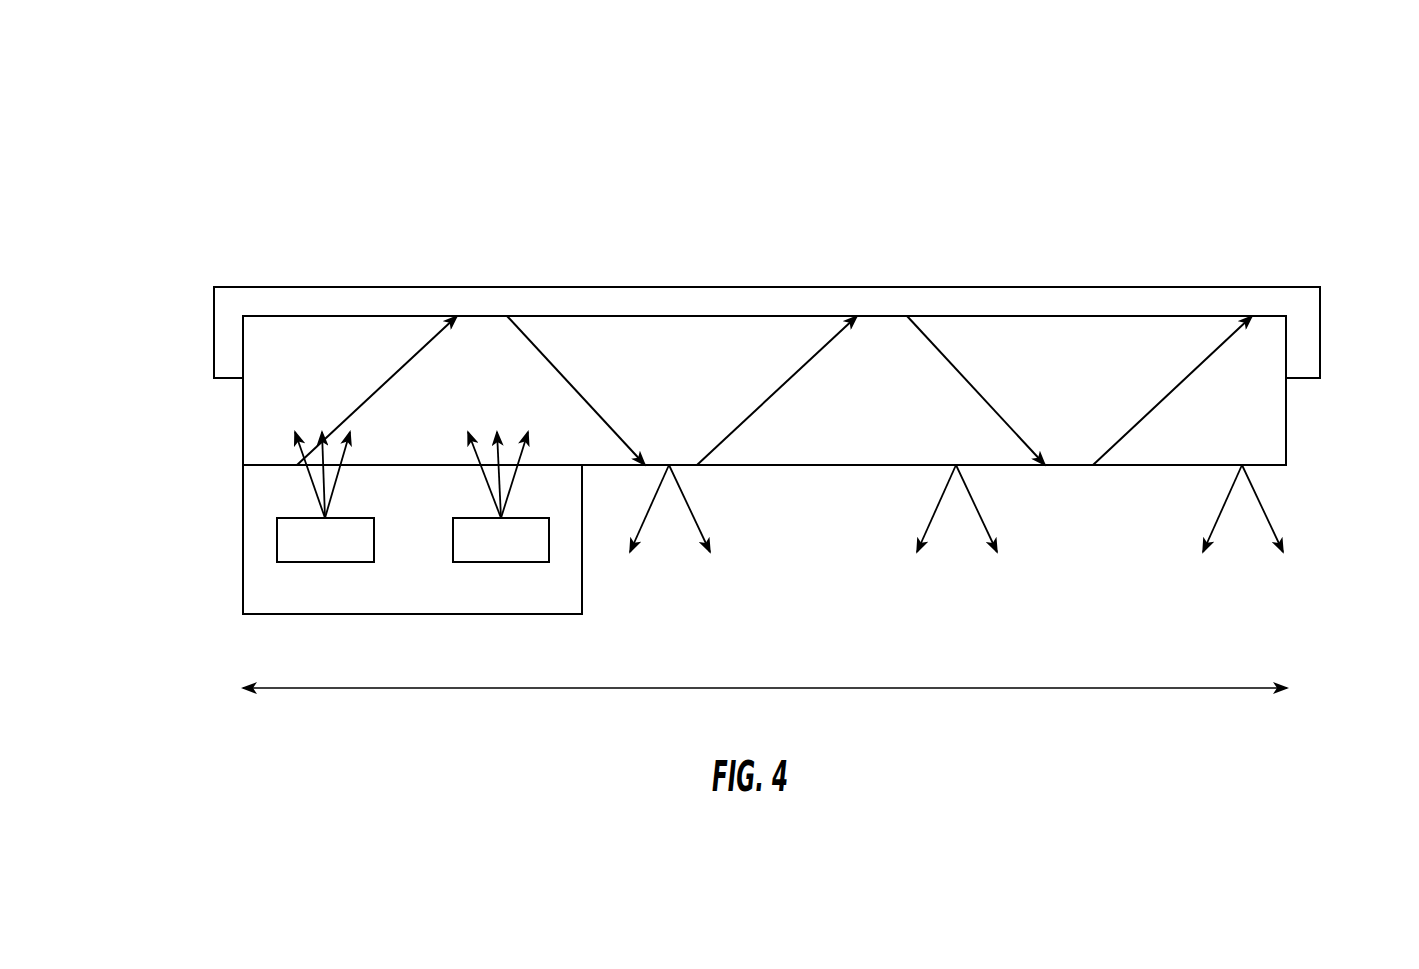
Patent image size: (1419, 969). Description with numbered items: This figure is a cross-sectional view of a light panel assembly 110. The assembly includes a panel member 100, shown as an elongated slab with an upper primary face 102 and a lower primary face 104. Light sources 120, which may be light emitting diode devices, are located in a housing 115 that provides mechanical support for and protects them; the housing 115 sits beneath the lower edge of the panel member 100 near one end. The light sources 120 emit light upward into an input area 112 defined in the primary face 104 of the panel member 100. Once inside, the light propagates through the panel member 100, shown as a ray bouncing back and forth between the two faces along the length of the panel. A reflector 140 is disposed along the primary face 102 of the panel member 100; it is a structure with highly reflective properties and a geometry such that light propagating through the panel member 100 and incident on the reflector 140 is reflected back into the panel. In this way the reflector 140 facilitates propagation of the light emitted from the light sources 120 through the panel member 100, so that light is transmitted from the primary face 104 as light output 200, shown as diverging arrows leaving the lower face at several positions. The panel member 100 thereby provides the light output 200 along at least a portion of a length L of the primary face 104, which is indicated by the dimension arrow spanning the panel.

The panel member 100 is at (1270, 448).
The primary face 102 is at (963, 316).
The primary face 104 is at (798, 466).
The light panel assembly 110 is at (1135, 110).
The input area 112 is at (386, 427).
The housing 115 is at (385, 614).
The light sources 120 is at (277, 545).
The reflector 140 is at (685, 300).
The light output 200 is at (812, 612).
The length L is at (822, 689).